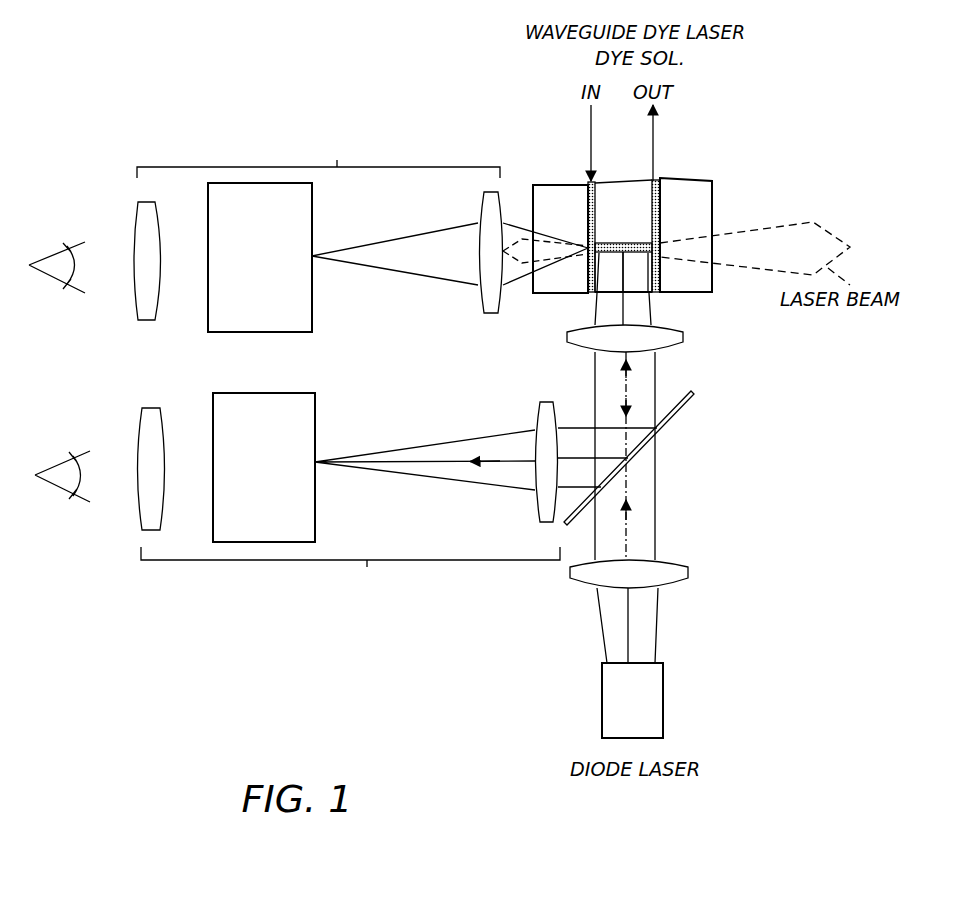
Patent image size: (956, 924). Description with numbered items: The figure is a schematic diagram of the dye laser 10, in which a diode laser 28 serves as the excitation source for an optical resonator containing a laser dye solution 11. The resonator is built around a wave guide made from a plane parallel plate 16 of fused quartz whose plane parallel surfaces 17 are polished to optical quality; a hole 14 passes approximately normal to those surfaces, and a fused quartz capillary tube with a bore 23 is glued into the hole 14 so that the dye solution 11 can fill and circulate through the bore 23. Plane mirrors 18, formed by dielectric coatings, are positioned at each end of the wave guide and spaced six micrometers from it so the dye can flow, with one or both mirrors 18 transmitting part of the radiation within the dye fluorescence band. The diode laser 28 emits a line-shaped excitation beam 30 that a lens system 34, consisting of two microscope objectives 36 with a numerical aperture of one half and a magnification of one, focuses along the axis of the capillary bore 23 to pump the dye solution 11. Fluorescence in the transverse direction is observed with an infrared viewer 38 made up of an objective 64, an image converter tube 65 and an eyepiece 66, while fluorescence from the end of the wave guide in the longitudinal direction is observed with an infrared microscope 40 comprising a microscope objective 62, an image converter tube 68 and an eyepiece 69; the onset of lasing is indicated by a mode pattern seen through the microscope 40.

The dye laser 10 is at (780, 354).
The laser dye solution 11 is at (646, 233).
The hole 14 is at (600, 295).
The plane parallel plate 16 is at (640, 281).
The plane parallel surfaces 17 is at (592, 185).
The plane mirrors 18 is at (588, 210).
The capillary bore 23 is at (614, 244).
The diode laser 28 is at (660, 692).
The excitation beam 30 is at (657, 618).
The lens system 34 is at (548, 590).
The microscope objectives 36 is at (683, 343).
The infrared viewer 38 is at (350, 569).
The infrared microscope 40 is at (318, 157).
The microscope objective 62 is at (484, 293).
The objective 64 is at (540, 500).
The image converter tube 65 is at (315, 520).
The eyepiece 66 is at (155, 515).
The image converter tube 68 is at (312, 320).
The eyepiece 69 is at (148, 324).